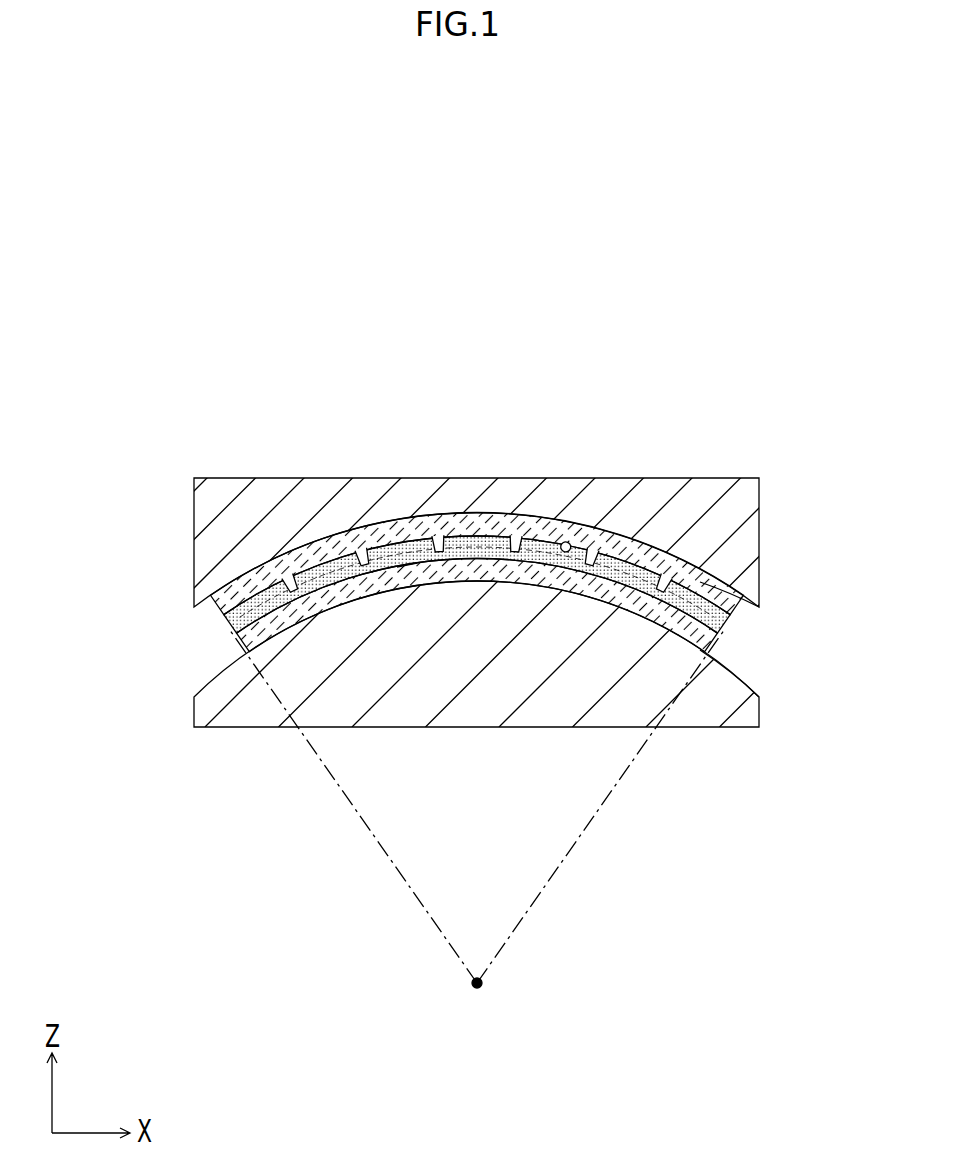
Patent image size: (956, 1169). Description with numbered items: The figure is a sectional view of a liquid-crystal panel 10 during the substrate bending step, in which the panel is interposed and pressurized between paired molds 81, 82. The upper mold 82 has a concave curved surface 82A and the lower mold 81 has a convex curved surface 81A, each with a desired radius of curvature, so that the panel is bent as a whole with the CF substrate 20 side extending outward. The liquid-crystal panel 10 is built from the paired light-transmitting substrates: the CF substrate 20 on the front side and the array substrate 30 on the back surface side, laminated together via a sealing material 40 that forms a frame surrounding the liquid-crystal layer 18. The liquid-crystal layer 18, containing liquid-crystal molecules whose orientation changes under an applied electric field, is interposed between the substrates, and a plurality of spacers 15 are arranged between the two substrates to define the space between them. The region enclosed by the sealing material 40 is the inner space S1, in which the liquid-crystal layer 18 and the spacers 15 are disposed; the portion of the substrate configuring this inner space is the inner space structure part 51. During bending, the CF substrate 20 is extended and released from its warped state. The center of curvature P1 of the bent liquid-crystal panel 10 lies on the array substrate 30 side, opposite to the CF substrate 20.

The liquid-crystal panel 10 is at (431, 692).
The inner space structure part 51 is at (477, 509).
The spacers 15 is at (477, 500).
The CF substrate 20 is at (477, 514).
The inner space S1 is at (578, 481).
The mold 82 is at (212, 556).
The concave curved surface 82A is at (751, 606).
The sealing material 40 is at (424, 596).
The mold 81 is at (215, 703).
The convex curved surface 81A is at (743, 678).
The liquid-crystal layer 18 is at (409, 672).
The array substrate 30 is at (477, 670).
The center of curvature P1 is at (477, 1004).